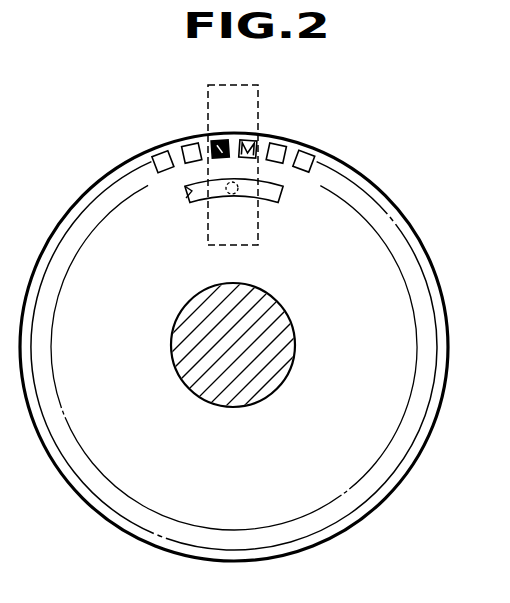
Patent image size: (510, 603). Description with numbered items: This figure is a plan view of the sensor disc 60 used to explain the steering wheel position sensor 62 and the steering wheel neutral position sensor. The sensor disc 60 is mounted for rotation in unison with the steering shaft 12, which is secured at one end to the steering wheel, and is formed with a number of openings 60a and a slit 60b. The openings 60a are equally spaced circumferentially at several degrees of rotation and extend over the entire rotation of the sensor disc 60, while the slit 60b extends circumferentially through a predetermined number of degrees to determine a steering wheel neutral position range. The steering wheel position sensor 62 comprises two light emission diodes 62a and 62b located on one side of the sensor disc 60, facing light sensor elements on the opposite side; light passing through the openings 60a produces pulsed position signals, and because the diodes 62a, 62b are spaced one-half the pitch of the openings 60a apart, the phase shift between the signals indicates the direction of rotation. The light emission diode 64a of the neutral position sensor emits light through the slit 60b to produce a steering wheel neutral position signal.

The steering shaft 12 is at (288, 345).
The sensor disc 60 is at (403, 218).
The openings 60a is at (308, 159).
The slit 60b is at (192, 190).
The steering wheel position sensor 62 is at (368, 62).
The light emission diode 62a is at (219, 143).
The light emission diode 62b is at (250, 144).
The light emission diode 64a is at (238, 184).